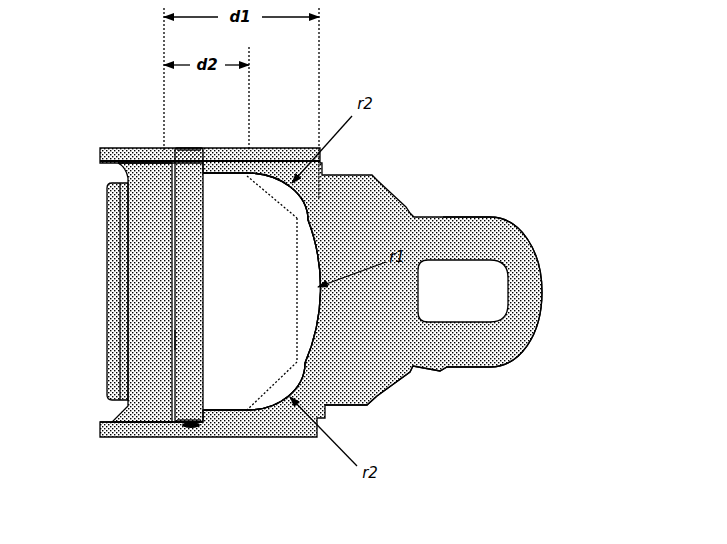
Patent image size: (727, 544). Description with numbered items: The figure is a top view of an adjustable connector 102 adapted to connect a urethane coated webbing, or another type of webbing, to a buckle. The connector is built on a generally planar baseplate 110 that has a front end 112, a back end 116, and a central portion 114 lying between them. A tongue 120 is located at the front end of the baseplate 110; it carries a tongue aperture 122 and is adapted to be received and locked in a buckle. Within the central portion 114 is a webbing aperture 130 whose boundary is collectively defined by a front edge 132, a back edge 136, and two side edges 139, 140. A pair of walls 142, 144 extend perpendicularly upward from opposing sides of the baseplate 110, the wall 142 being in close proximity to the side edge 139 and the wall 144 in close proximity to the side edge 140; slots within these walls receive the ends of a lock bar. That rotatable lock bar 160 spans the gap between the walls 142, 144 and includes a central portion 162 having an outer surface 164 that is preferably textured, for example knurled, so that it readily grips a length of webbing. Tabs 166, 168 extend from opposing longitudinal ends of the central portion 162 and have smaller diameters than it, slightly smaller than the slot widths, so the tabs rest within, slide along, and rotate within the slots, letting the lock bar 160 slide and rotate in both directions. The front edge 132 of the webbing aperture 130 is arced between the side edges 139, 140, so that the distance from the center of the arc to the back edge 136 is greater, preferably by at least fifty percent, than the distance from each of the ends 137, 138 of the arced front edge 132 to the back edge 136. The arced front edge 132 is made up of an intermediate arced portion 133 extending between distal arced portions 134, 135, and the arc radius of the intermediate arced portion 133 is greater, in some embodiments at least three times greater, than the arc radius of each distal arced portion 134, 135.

The adjustable connector 102 is at (126, 118).
The baseplate 110 is at (372, 175).
The front end 112 is at (541, 290).
The central portion 114 is at (335, 362).
The back end 116 is at (107, 276).
The tongue 120 is at (503, 238).
The tongue aperture 122 is at (463, 291).
The webbing aperture 130 is at (279, 292).
The front edge 132 is at (318, 303).
The intermediate arced portion 133 is at (297, 290).
The distal arced portion 134 is at (272, 381).
The distal arced portion 135 is at (274, 203).
The back edge 136 is at (166, 271).
The end of arced front edge 137 is at (252, 165).
The end of arced front edge 138 is at (247, 412).
The side edge 139 is at (216, 175).
The side edge 140 is at (207, 411).
The wall 142 is at (237, 148).
The wall 144 is at (210, 428).
The rotatable lock bar 160 is at (175, 352).
The central portion 162 is at (183, 386).
The outer surface 164 is at (183, 340).
The tab 166 is at (187, 150).
The tab 168 is at (188, 432).